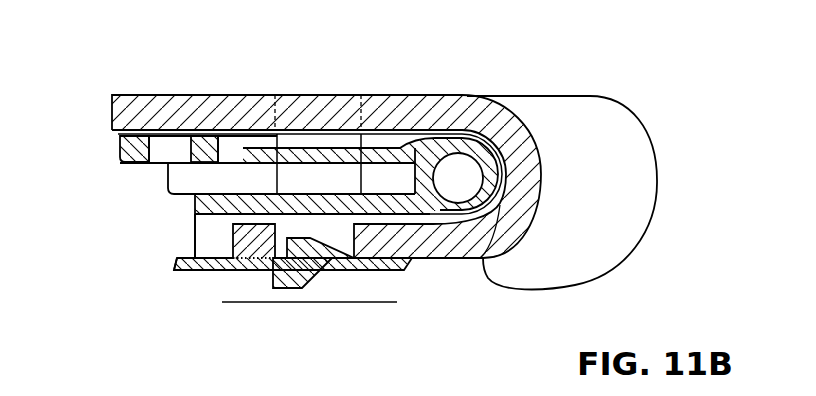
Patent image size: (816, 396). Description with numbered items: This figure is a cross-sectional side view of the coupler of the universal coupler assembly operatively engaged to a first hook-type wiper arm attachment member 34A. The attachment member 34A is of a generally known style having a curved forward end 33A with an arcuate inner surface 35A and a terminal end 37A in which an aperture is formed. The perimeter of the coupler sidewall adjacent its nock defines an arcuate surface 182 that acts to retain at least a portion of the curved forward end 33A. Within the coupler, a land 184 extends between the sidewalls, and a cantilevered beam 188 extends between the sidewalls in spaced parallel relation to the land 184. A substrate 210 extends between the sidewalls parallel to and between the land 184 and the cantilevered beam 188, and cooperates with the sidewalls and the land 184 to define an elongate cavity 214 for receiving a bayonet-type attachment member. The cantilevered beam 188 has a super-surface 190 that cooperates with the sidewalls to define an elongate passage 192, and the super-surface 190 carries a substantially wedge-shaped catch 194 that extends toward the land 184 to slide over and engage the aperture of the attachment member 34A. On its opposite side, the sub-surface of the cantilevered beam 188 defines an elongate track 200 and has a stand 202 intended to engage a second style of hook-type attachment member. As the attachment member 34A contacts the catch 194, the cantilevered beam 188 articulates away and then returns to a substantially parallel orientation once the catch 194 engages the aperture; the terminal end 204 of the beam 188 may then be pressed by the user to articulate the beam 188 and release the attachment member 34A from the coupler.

The first hook-type wiper arm attachment member 34A is at (99, 91).
The curved forward end 33A is at (526, 125).
The arcuate inner surface 35A is at (496, 203).
The arcuate surface 182 is at (653, 197).
The land 184 is at (119, 146).
The elongate cavity 214 is at (168, 173).
The substrate 210 is at (194, 204).
The elongate passage 192 is at (191, 231).
The super-surface 190 is at (204, 300).
The terminal end 204 is at (182, 256).
The cantilevered beam 188 is at (176, 258).
The terminal end 37A is at (235, 238).
The elongate track 200 is at (236, 290).
The stand 202 is at (288, 290).
The catch 194 is at (350, 251).